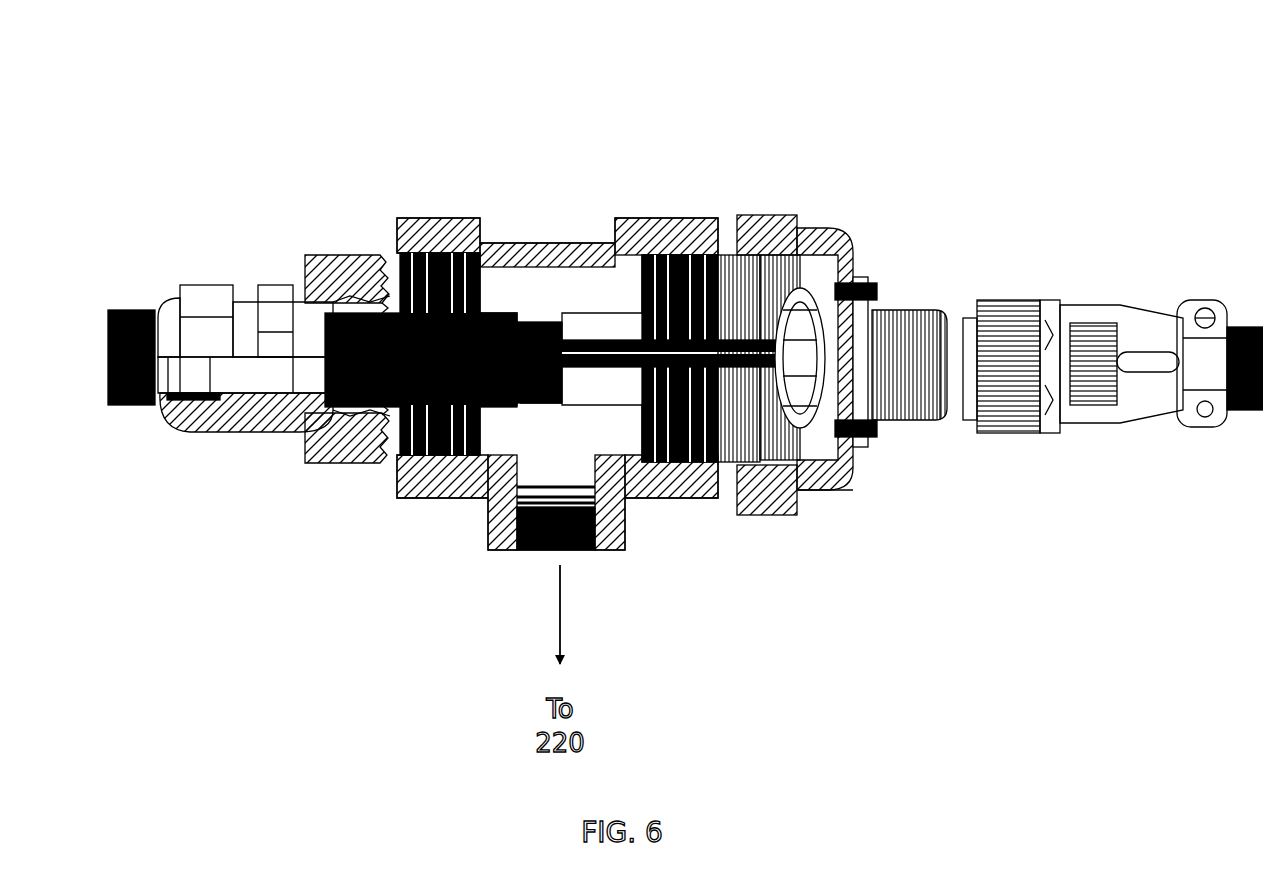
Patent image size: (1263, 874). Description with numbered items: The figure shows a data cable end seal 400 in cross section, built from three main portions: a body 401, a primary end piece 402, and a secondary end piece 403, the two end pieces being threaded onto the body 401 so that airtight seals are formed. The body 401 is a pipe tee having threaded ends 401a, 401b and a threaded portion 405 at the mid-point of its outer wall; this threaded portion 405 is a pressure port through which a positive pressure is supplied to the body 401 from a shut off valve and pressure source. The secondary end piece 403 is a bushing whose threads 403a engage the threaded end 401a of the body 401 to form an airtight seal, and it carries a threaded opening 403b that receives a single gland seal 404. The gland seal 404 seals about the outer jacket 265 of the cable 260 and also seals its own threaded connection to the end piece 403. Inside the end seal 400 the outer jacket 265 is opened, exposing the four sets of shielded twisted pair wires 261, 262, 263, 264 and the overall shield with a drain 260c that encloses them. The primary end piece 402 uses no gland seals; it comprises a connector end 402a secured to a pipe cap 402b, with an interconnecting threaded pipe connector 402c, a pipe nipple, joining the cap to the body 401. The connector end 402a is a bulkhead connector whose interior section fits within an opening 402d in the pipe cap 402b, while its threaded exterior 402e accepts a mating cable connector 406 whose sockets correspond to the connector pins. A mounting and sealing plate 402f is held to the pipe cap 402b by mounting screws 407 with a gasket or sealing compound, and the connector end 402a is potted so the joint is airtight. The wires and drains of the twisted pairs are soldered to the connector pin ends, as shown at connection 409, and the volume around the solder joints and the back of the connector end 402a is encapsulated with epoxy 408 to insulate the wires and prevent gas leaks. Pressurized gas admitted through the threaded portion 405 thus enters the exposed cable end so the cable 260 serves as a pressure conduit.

The end seal 400 is at (915, 98).
The body 401 is at (603, 262).
The threaded end 401a is at (430, 222).
The threaded end 401b is at (672, 256).
The primary end piece 402 is at (668, 565).
The connector end 402a is at (906, 304).
The pipe cap 402b is at (777, 214).
The threaded pipe connector 402c is at (727, 250).
The opening 402d is at (833, 218).
The threaded exterior 402e is at (921, 416).
The mounting plate 402f is at (858, 282).
The secondary end piece 403 is at (304, 242).
The threads 403a is at (392, 466).
The threaded opening 403b is at (302, 444).
The gland seal 404 is at (218, 422).
The threaded portion 405 is at (600, 548).
The cable connector 406 is at (1027, 300).
The mounting screws 407 is at (878, 434).
The epoxy 408 is at (856, 462).
The connection 409 is at (826, 478).
The cable 260 is at (139, 412).
The shield with a drain 260c is at (563, 406).
The shielded twisted pair wires 261 is at (530, 322).
The shielded twisted pair wires 262 is at (546, 322).
The shielded twisted pair wires 263 is at (518, 402).
The shielded twisted pair wires 264 is at (552, 406).
The outer jacket 265 is at (127, 308).